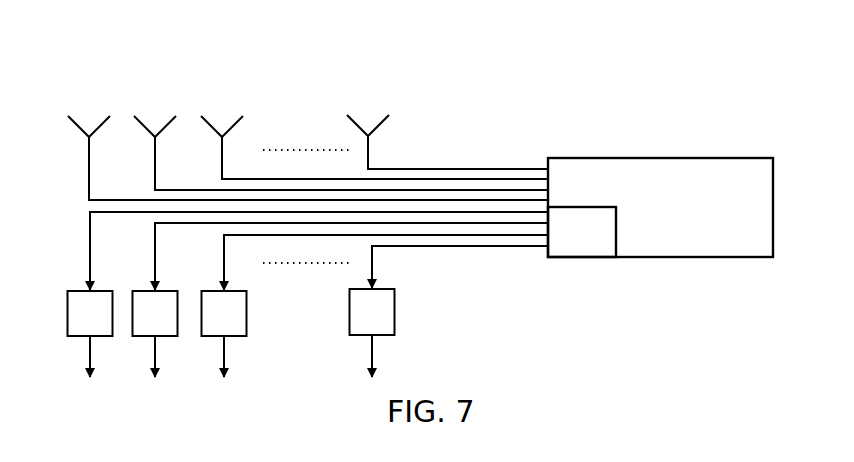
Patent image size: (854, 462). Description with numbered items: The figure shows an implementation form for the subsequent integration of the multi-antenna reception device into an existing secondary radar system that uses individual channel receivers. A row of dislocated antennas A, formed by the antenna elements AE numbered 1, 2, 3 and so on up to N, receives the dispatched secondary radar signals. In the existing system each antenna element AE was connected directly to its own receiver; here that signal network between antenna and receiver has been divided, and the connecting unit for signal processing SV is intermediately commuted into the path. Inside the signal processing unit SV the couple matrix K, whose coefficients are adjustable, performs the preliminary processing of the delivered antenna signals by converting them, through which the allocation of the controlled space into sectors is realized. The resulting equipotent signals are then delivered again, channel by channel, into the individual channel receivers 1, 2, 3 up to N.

The antennas A is at (146, 102).
The antenna elements AE is at (293, 202).
The first antenna element 1 is at (308, 246).
The second antenna element 2 is at (341, 246).
The third antenna element 3 is at (374, 246).
The N-th antenna element N is at (447, 246).
The connecting unit for signal processing SV is at (712, 170).
The couple matrix K is at (592, 242).